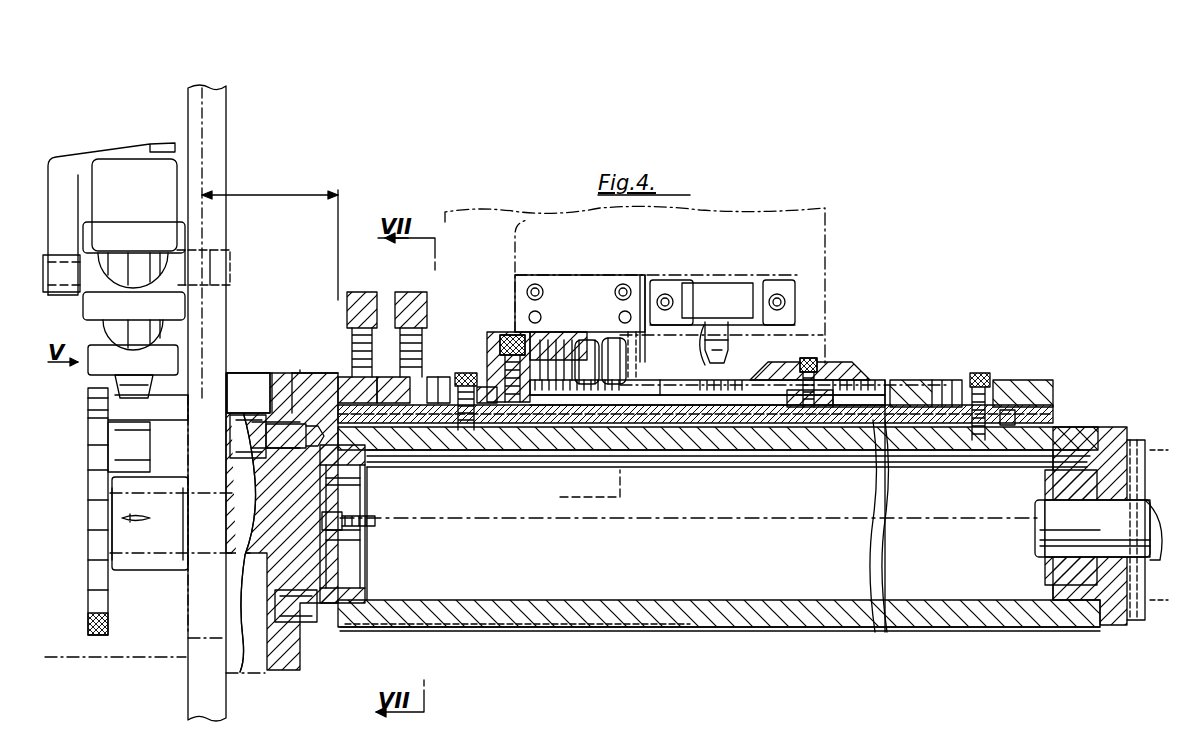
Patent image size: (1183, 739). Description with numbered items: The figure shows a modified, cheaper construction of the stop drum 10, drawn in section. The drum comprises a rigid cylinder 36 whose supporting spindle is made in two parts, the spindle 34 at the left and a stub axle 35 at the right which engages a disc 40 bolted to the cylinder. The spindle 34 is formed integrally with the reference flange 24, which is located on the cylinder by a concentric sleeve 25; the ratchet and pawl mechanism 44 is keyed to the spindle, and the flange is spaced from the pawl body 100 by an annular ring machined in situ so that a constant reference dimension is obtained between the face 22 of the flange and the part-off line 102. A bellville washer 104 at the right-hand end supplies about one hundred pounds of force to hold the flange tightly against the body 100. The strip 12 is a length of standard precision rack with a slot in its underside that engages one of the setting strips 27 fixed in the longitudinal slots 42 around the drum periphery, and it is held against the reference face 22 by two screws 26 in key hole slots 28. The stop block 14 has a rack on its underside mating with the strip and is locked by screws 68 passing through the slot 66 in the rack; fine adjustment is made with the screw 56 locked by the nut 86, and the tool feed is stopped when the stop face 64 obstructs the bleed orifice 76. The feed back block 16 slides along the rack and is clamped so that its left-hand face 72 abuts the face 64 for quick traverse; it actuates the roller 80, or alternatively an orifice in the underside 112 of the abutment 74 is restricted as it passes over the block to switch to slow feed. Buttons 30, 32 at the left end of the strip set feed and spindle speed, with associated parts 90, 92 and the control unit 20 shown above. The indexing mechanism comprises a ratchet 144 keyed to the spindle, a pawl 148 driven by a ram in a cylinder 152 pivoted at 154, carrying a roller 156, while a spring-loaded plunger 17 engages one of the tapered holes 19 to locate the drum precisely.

The drum 10 is at (719, 529).
The strip 12 is at (892, 380).
The stop block 14 is at (527, 290).
The feed back block 16 is at (810, 362).
The plunger 17 is at (245, 392).
The tapered holes 19 is at (350, 482).
The control unit 20 is at (805, 252).
The reference face 22 is at (320, 400).
The reference flange 24 is at (292, 390).
The concentric sleeve 25 is at (362, 592).
The screws 26 is at (482, 392).
The setting strips 27 is at (930, 390).
The key hole slots 28 is at (462, 375).
The adjustable nut or button 30 is at (348, 380).
The adjustable nut or button 32 is at (443, 380).
The spindle 34 is at (238, 560).
The stub axle 35 is at (1092, 528).
The rigid cylinder 36 is at (662, 432).
The disc 40 is at (1060, 565).
The longitudinal slots 42 is at (680, 630).
The ratchet and pawl mechanism 44 is at (172, 400).
The screw 56 is at (598, 335).
The stop face 64 is at (612, 338).
The slot 66 is at (852, 375).
The locking screws 68 is at (510, 335).
The left-hand face 72 is at (732, 380).
The abutment 74 is at (660, 290).
The bleed orifice 76 is at (582, 492).
The roller 80 is at (715, 335).
The nut 86 is at (578, 345).
The clamp block 90 is at (425, 292).
The clamp block 92 is at (365, 292).
The body of the pawl mechanism 100 is at (242, 383).
The part-off line 102 is at (203, 180).
The bellville washer 104 is at (1148, 440).
The underside of the abutment 112 is at (640, 380).
The ratchet 144 is at (108, 612).
The pawl 148 is at (155, 368).
The cylinder 152 is at (120, 262).
The pivot mounting 154 is at (96, 232).
The roller 156 is at (100, 403).